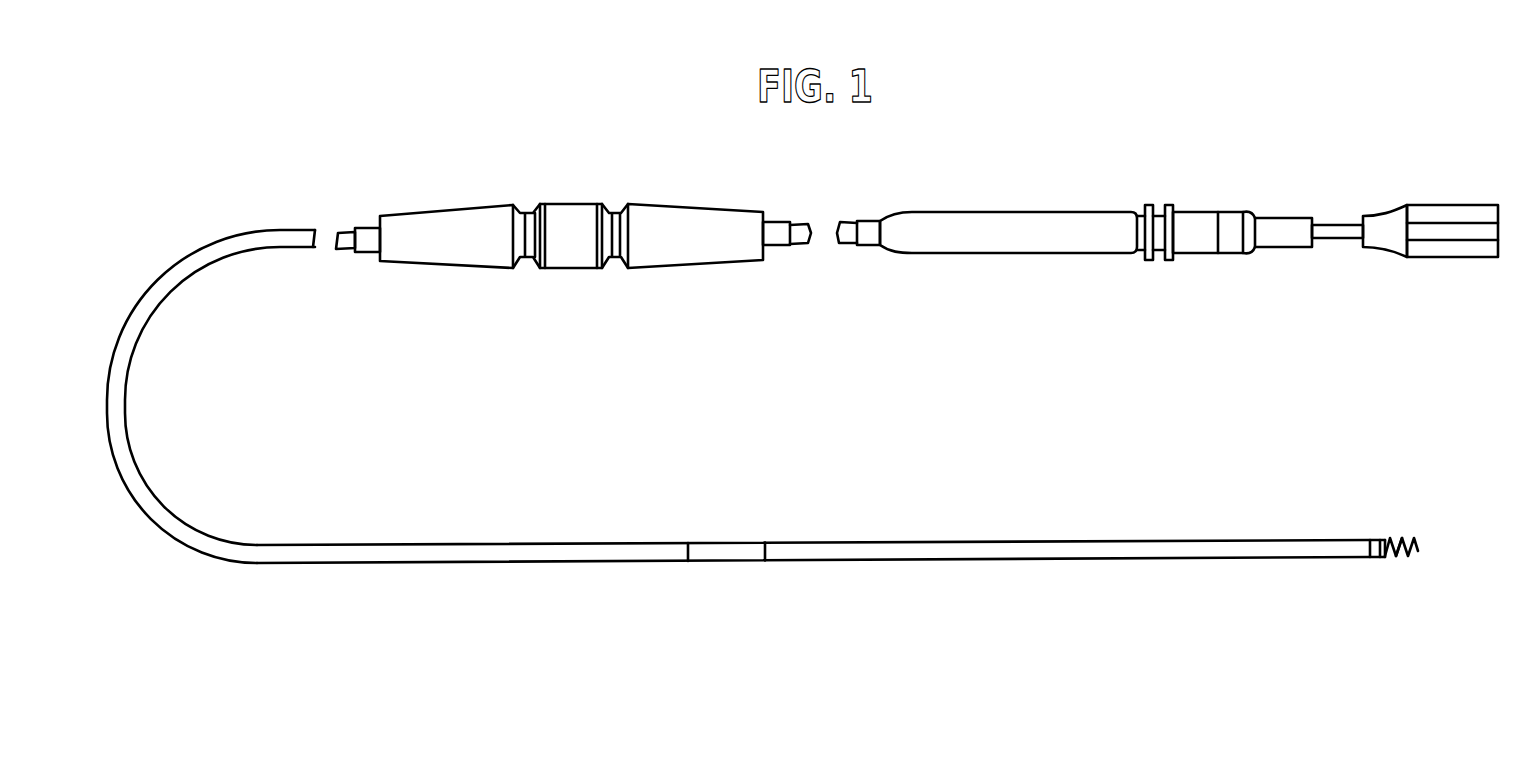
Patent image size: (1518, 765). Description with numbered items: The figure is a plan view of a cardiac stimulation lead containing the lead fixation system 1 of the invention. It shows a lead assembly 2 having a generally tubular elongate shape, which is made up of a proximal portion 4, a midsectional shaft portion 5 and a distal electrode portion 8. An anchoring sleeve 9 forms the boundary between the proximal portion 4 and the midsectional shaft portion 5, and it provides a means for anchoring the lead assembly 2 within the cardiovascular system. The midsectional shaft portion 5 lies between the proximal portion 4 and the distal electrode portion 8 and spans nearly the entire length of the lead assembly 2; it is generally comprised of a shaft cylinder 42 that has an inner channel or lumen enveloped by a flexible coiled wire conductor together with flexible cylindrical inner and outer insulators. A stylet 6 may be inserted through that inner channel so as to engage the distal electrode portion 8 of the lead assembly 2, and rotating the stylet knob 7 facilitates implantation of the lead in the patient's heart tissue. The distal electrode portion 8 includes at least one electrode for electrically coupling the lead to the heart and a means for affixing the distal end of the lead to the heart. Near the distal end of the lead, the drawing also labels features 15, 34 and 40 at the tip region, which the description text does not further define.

The lead fixation system 1 is at (1425, 546).
The lead assembly 2 is at (799, 457).
The proximal portion 4 is at (1167, 213).
The midsectional shaft portion 5 is at (165, 400).
The stylet 6 is at (1333, 238).
The stylet knob 7 is at (1433, 250).
The distal electrode portion 8 is at (1391, 570).
The anchoring sleeve 9 is at (563, 258).
The coil winding 15 is at (1404, 556).
The band 34 is at (1391, 540).
The coil 40 is at (1418, 551).
The shaft cylinder 42 is at (860, 552).